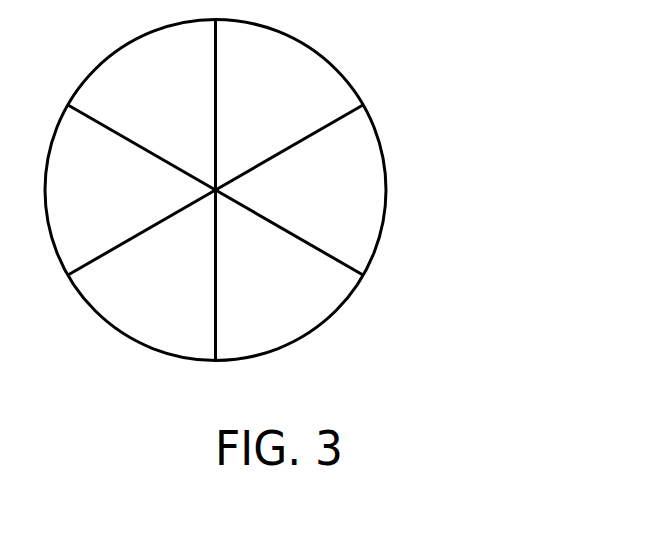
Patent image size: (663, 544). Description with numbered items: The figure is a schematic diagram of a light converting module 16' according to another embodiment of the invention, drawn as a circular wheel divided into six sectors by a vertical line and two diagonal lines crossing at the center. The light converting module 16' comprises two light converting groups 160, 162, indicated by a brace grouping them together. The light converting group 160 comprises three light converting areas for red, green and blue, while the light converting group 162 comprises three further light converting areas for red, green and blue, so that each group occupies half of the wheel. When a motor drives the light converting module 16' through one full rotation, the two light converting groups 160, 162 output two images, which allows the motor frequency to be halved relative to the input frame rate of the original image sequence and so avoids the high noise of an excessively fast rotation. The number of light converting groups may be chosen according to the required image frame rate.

The light converting group 160 is at (385, 222).
The light converting group 162 is at (325, 323).
The light converting module 16' is at (314, 190).